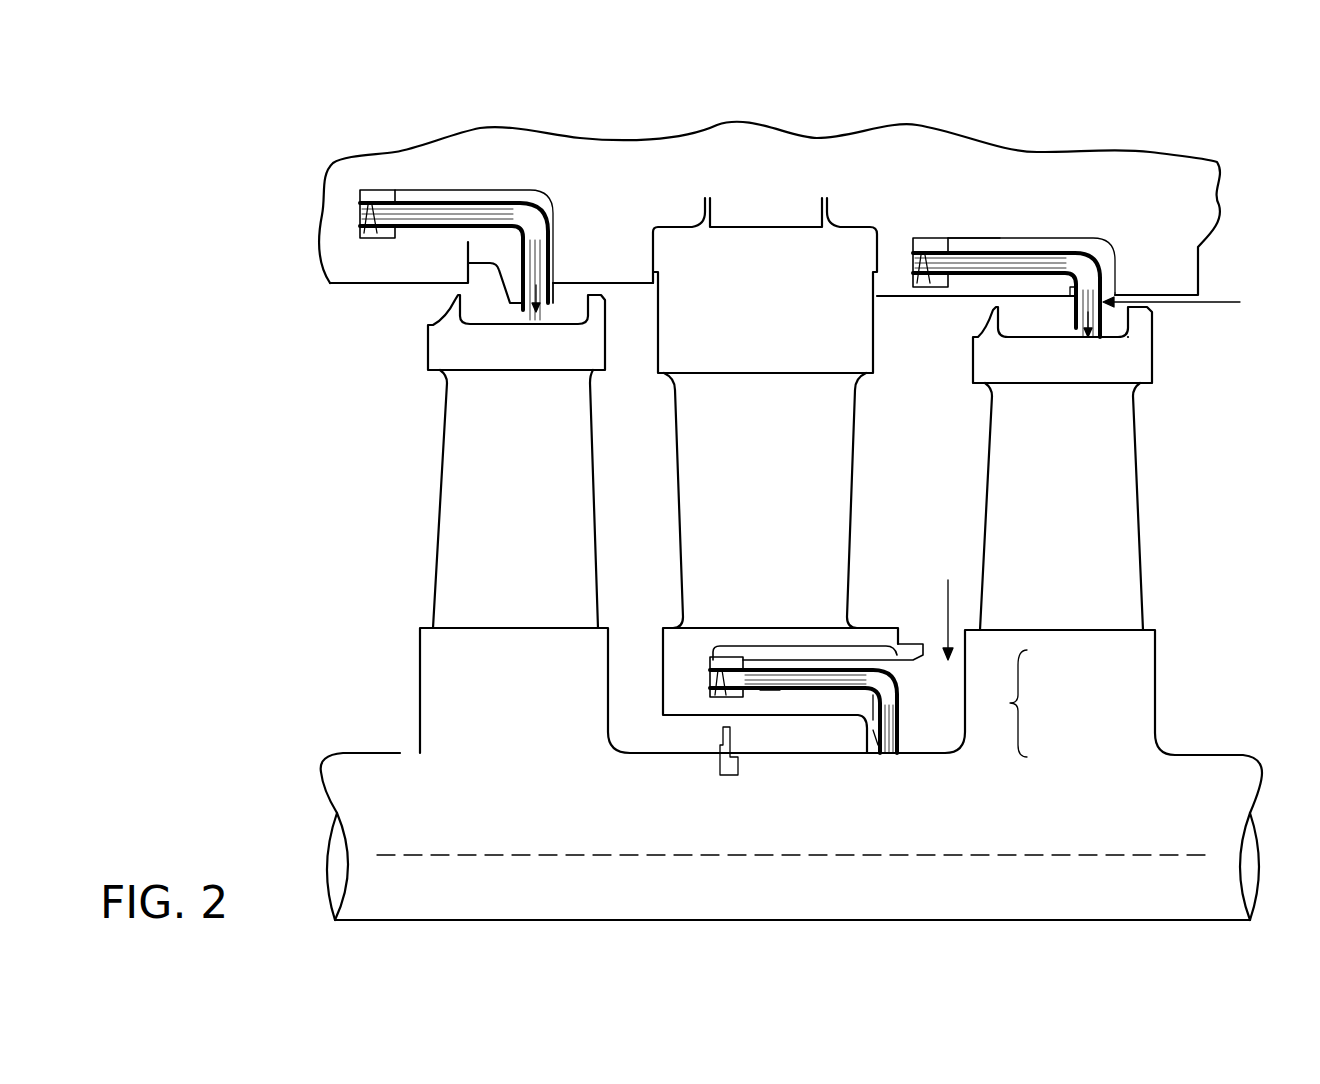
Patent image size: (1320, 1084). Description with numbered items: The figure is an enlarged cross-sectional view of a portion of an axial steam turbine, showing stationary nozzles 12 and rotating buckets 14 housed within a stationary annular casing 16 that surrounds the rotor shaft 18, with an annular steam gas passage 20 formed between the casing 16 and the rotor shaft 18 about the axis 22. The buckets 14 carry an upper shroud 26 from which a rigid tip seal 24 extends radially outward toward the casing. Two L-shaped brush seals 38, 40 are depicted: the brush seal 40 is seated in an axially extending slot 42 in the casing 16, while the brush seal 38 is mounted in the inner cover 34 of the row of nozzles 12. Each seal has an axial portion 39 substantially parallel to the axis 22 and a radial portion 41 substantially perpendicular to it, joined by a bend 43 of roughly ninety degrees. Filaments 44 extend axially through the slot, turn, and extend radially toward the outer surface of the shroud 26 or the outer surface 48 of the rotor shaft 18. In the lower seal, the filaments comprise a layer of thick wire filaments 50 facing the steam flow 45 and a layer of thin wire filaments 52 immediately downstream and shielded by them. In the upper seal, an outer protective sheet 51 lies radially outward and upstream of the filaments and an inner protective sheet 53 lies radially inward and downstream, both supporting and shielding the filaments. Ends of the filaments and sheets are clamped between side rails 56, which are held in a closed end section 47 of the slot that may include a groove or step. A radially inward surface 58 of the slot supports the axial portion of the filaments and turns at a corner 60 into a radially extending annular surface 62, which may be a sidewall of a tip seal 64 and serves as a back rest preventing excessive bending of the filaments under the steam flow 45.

The nozzle 12 is at (754, 521).
The bucket 14 is at (497, 521).
The casing 16 is at (934, 201).
The rotor shaft 18 is at (377, 813).
The steam gas passage 20 is at (399, 496).
The axis 22 is at (1003, 857).
The tip seal 24 is at (1145, 336).
The shroud 26 is at (1011, 373).
The inner cover 34 is at (724, 708).
The L-shaped brush seal 38 is at (800, 710).
The axial portion 39 is at (803, 644).
The L-shaped brush seal 40 is at (413, 150).
The radial portion 41 is at (1010, 703).
The slot 42 is at (982, 232).
The bend 43 is at (893, 677).
The filaments 44 is at (440, 212).
The steam flow 45 is at (1240, 302).
The closed end section 47 is at (383, 240).
The outer surface 48 is at (953, 740).
The thick wire filaments 50 is at (890, 735).
The outer protective sheet 51 is at (482, 200).
The thin wire filaments 52 is at (1071, 306).
The inner protective sheet 53 is at (425, 232).
The side rails 56 is at (362, 228).
The radially inward surface 58 is at (975, 272).
The corner 60 is at (1086, 290).
The radially extending annular surface 62 is at (878, 726).
The tip seal 64 is at (1064, 322).